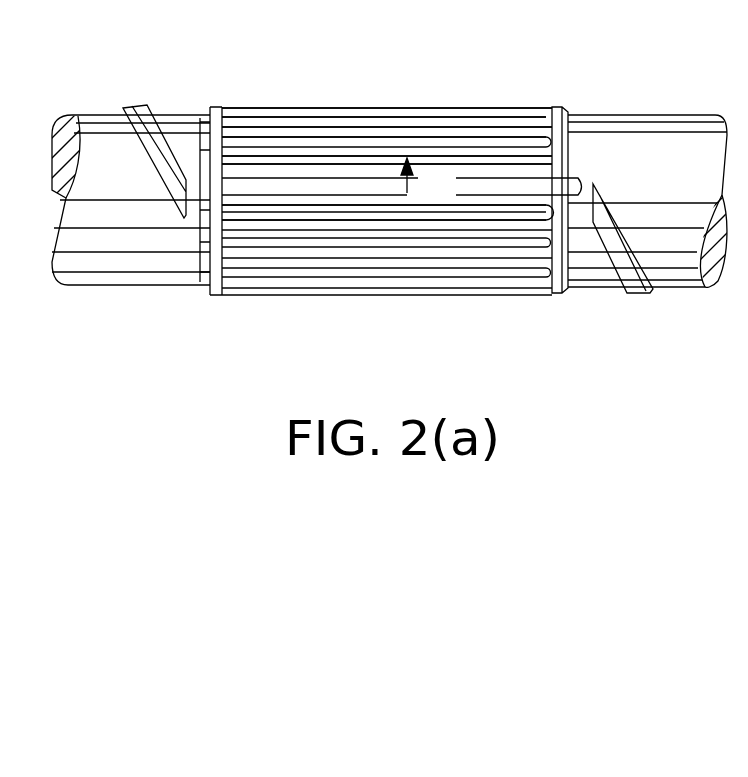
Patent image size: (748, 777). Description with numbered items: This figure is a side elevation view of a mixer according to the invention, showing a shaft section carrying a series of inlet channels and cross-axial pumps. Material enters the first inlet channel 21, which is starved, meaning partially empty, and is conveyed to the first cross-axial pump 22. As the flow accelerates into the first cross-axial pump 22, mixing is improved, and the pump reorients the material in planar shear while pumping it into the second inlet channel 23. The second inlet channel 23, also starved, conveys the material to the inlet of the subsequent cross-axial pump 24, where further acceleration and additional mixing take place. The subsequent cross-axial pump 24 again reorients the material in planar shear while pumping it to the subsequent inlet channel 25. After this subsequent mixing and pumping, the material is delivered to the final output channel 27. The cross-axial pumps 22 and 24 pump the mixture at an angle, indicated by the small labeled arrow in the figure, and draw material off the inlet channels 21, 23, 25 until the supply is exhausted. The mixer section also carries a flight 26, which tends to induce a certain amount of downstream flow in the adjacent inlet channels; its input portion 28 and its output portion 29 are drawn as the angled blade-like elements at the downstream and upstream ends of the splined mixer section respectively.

The first inlet channel 21 is at (565, 178).
The first cross-axial pump 22 is at (512, 167).
The second inlet channel 23 is at (486, 157).
The subsequent cross-axial pump 24 is at (300, 122).
The subsequent inlet channel 25 is at (354, 125).
The flight 26 is at (502, 198).
The final output channel 27 is at (262, 108).
The input portion of flight 28 is at (617, 253).
The output portion of flight 29 is at (163, 150).